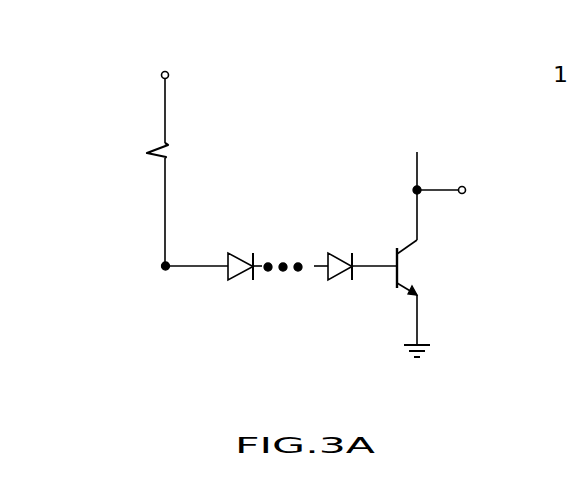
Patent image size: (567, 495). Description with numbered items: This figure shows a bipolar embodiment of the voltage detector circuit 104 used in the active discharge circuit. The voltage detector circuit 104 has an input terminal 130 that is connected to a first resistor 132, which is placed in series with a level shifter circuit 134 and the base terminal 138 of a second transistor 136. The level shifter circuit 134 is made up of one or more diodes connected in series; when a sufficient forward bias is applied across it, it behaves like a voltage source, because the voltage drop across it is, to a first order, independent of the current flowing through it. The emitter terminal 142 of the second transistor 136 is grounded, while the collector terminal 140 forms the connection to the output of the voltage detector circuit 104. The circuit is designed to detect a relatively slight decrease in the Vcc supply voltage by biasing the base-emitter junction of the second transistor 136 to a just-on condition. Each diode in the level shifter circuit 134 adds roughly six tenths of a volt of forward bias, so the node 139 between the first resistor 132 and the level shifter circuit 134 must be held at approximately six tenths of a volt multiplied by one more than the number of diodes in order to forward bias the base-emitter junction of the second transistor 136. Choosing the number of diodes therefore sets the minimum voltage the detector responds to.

The voltage detector circuit 104 is at (328, 82).
The input terminal 130 is at (162, 102).
The first resistor 132 is at (168, 146).
The level shifter circuit 134 is at (232, 277).
The second transistor 136 is at (425, 257).
The base terminal 138 is at (372, 268).
The node 139 is at (163, 269).
The collector terminal 140 is at (417, 214).
The emitter terminal 142 is at (420, 322).